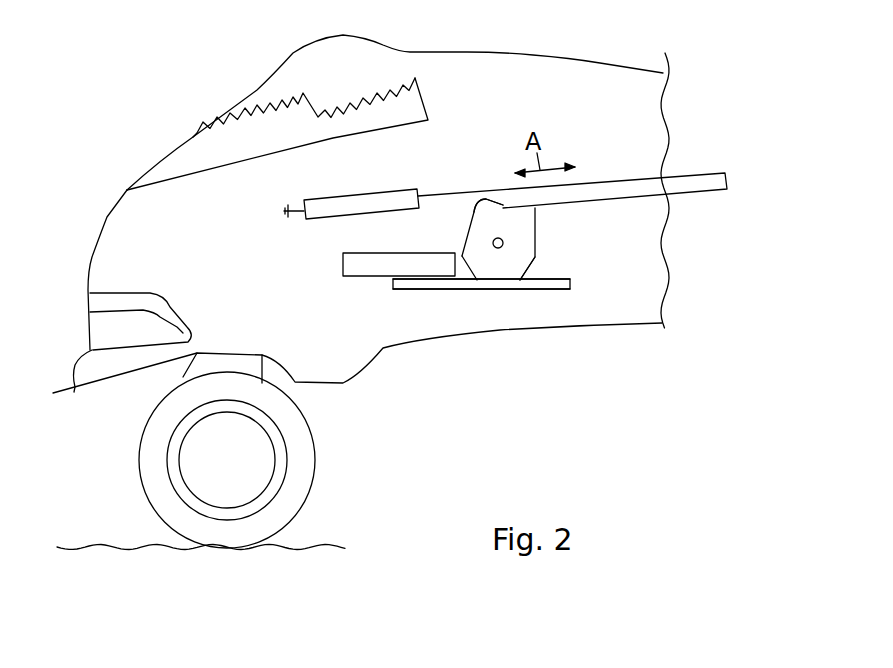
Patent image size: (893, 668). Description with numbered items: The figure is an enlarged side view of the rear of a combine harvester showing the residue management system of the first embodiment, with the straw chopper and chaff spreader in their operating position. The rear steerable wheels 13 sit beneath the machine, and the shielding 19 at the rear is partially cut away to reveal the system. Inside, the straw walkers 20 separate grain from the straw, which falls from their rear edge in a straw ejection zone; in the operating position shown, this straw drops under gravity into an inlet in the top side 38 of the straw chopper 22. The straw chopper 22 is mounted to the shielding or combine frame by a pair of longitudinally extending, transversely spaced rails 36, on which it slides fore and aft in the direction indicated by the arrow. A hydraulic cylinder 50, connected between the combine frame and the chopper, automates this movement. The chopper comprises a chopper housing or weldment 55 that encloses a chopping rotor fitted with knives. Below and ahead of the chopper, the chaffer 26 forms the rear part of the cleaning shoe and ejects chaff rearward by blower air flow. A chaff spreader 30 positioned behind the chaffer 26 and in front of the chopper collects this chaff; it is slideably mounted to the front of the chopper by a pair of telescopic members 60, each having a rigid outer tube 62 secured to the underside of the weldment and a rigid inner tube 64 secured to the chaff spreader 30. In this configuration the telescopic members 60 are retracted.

The rear steerable wheels 13 is at (300, 508).
The shielding 19 is at (660, 118).
The straw walkers 20 is at (325, 133).
The straw chopper 22 is at (528, 236).
The chaffer 26 is at (115, 327).
The chaff spreader 30 is at (355, 277).
The rails 36 is at (613, 183).
The top side 38 is at (503, 213).
The hydraulic cylinder 50 is at (387, 200).
The chopper housing or weldment 55 is at (517, 257).
The telescopic members 60 is at (432, 282).
The outer tube 62 is at (505, 282).
The inner tube 64 is at (460, 282).